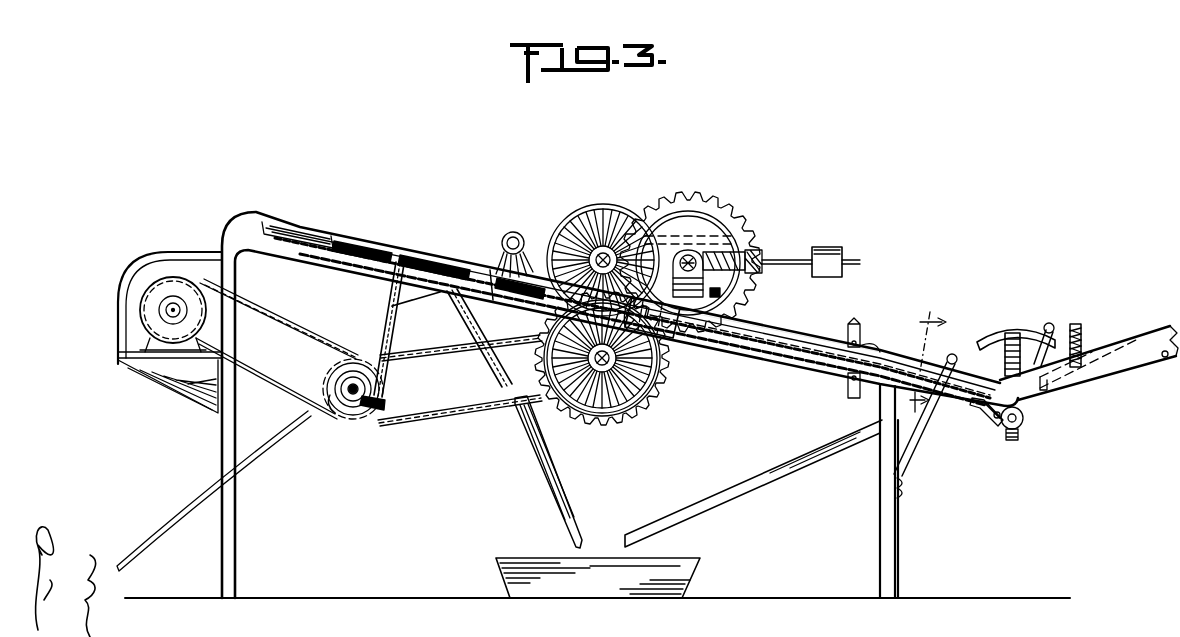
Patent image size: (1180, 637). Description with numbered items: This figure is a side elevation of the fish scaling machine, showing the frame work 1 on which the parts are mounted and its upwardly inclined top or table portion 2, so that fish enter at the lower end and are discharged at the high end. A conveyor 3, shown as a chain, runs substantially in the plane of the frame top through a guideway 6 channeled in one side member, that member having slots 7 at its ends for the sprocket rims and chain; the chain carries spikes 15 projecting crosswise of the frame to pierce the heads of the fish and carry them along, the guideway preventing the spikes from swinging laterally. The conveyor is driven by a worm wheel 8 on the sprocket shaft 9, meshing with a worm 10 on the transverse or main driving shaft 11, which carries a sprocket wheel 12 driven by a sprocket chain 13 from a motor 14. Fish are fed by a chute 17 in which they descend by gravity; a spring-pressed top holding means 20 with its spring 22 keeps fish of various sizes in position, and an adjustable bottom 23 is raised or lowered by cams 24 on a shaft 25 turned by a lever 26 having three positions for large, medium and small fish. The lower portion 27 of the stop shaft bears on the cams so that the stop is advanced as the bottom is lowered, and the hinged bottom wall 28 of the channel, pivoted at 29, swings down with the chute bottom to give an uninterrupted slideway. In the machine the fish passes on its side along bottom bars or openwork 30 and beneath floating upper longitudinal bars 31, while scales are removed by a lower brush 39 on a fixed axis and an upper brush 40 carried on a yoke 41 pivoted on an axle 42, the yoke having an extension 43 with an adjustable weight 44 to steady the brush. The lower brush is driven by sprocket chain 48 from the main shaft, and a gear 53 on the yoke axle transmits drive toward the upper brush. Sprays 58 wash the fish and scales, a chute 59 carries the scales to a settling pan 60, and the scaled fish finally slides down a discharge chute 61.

The frame work 1 is at (224, 447).
The top or table portion 2 is at (445, 262).
The conveyor 3 is at (358, 250).
The guideway 6 is at (904, 363).
The slots 7 is at (262, 226).
The worm wheel 8 is at (386, 401).
The shaft 9 is at (388, 340).
The worm 10 is at (352, 406).
The transverse or main driving shaft 11 is at (336, 386).
The sprocket wheel 12 is at (355, 374).
The sprocket chain 13 is at (268, 316).
The motor 14 is at (166, 287).
The spikes 15 is at (315, 238).
The chute 17 is at (1150, 326).
The top holding means 20 is at (1098, 350).
The spring 22 is at (1082, 331).
The adjustable bottom 23 is at (1086, 386).
The cams 24 is at (1022, 426).
The shaft 25 is at (1018, 441).
The lever 26 is at (1045, 326).
The lower portion 27 is at (995, 418).
The bottom wall 28 is at (980, 403).
The hinge 29 is at (884, 392).
The bars or openwork 30 is at (673, 341).
The longitudinal bars or open-work 31 is at (790, 334).
The brush 39 is at (618, 424).
The brush 40 is at (602, 218).
The yoke 41 is at (745, 250).
The axle 42 is at (692, 256).
The extension 43 is at (778, 261).
The adjustable weight 44 is at (826, 250).
The sprocket chain 48 is at (444, 410).
The gear 53 is at (676, 202).
The sprays 58 is at (513, 232).
The chute 59 is at (537, 463).
The settling pan 60 is at (518, 557).
The chute 61 is at (270, 450).